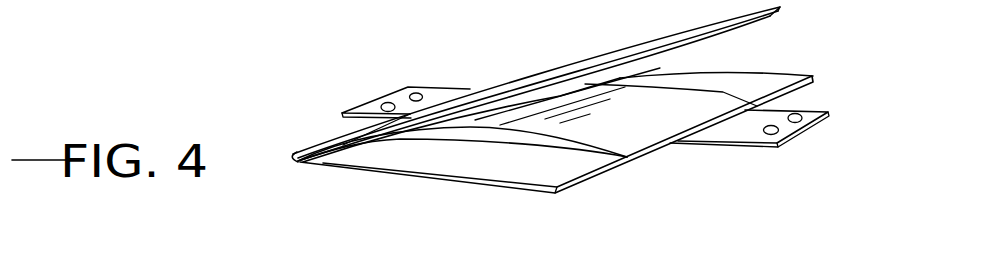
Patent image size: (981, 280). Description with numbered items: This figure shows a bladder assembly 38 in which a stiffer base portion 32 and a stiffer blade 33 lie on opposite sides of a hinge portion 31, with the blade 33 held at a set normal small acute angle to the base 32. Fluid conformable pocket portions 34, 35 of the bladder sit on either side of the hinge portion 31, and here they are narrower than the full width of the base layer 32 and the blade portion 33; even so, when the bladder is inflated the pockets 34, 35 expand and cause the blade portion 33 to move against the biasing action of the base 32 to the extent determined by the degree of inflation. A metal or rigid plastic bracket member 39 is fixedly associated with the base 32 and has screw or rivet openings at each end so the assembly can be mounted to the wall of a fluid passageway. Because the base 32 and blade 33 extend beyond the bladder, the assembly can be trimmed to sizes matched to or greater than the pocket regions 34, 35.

The hinge portion 31 is at (292, 159).
The base portion 32 is at (813, 81).
The blade 33 is at (477, 118).
The fluid conformable pocket portion 34 is at (723, 92).
The fluid conformable pocket portion 35 is at (717, 47).
The assembly 38 is at (588, 203).
The bracket member 39 is at (805, 134).